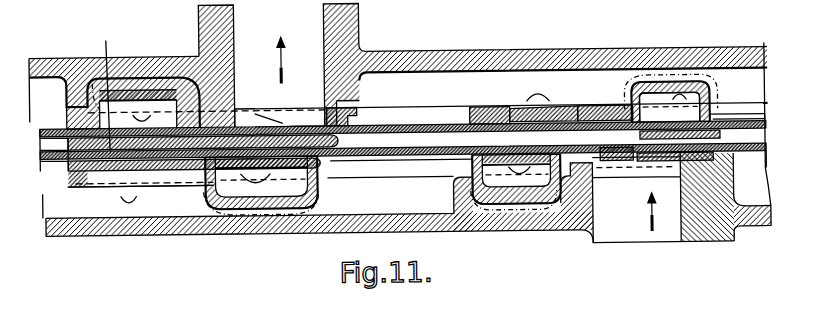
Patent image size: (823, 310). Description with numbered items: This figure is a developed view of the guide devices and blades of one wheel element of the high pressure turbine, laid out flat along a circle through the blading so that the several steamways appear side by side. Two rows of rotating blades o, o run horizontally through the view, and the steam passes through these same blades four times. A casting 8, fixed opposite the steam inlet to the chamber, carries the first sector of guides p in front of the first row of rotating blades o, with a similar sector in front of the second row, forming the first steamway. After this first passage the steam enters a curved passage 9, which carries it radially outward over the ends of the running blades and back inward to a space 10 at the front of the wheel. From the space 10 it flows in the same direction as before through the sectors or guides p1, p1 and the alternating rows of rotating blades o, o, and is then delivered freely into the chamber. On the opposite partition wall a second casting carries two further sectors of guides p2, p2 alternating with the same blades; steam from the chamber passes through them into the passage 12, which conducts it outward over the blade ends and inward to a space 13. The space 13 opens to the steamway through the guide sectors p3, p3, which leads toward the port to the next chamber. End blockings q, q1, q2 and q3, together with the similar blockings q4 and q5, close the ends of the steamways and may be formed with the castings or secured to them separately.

The rotating blades o is at (413, 147).
The casting 8 is at (574, 180).
The curved passage 9 is at (659, 102).
The space 10 is at (499, 180).
The passage 12 is at (160, 110).
The space 13 is at (275, 186).
The sector of guides p is at (671, 128).
The sectors or guides p1 is at (507, 140).
The sectors of guides p2 is at (107, 86).
The guide sectors p3 is at (285, 150).
The end blocking q is at (620, 130).
The end blocking q1 is at (578, 130).
The end blocking q2 is at (83, 165).
The end blocking q3 is at (243, 130).
The passage q4 is at (458, 125).
The passage q5 is at (353, 125).